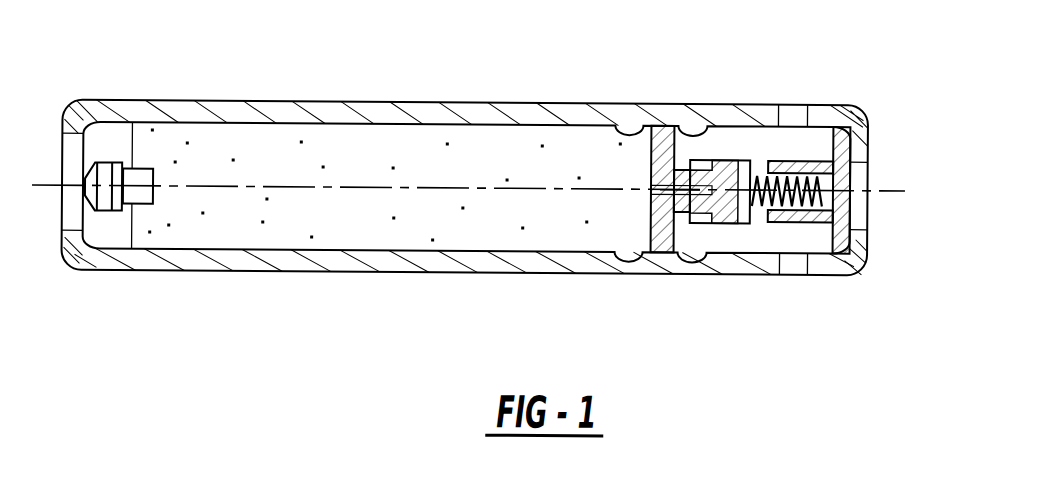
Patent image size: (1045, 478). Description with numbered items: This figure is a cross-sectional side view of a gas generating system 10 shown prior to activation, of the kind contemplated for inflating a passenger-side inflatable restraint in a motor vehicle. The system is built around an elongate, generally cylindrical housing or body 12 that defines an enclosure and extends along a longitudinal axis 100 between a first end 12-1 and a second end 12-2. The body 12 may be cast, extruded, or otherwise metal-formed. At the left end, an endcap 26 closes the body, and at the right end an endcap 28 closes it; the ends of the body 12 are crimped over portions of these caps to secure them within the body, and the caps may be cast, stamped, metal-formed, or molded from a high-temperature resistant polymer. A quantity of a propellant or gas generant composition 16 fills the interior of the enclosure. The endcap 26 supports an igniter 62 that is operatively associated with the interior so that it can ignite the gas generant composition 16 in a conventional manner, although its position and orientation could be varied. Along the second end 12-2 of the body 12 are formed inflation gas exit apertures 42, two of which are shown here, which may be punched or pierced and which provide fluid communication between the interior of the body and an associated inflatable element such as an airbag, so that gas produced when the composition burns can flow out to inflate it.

The gas generating system 10 is at (480, 215).
The housing or body 12 is at (318, 272).
The first end 12-1 is at (95, 266).
The second end 12-2 is at (847, 271).
The propellant or gas generant composition 16 is at (347, 136).
The endcap 26 is at (112, 144).
The endcap 28 is at (847, 149).
The inflation gas exit apertures 42 is at (798, 273).
The igniter 62 is at (142, 179).
The longitudinal axis 100 is at (888, 187).